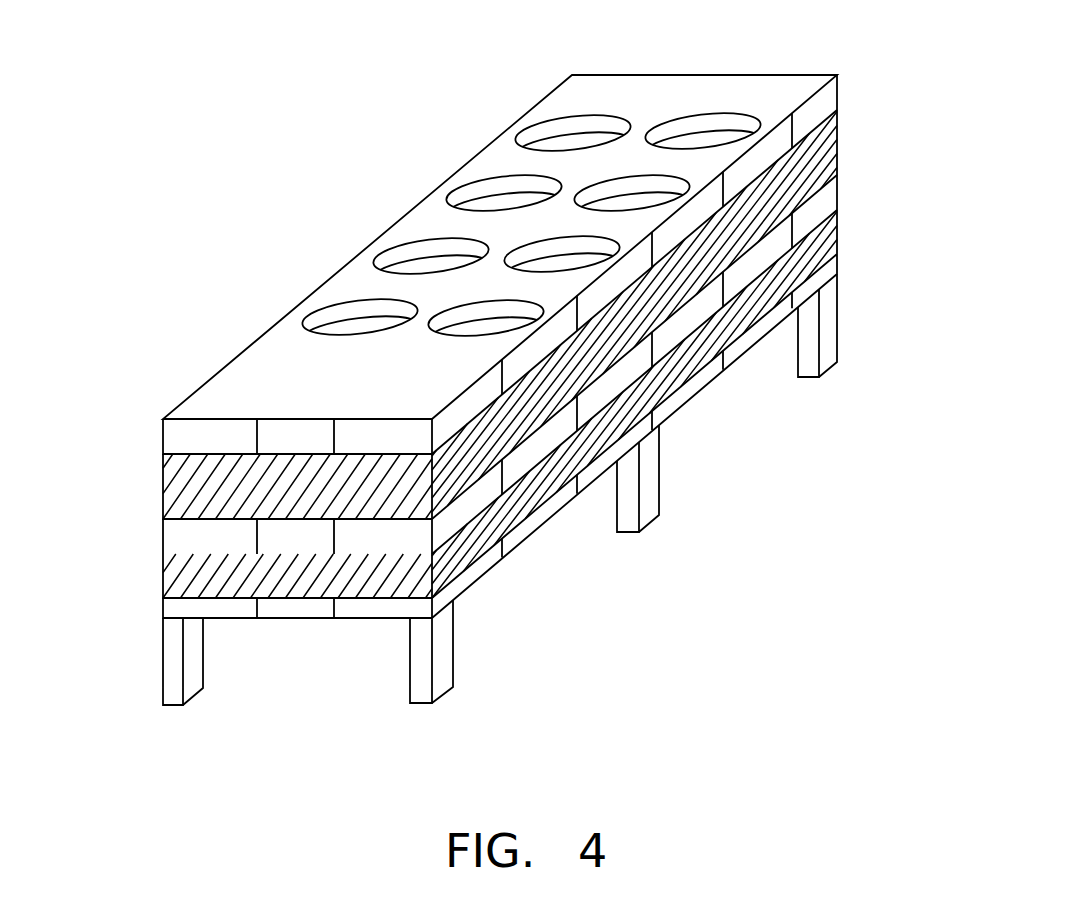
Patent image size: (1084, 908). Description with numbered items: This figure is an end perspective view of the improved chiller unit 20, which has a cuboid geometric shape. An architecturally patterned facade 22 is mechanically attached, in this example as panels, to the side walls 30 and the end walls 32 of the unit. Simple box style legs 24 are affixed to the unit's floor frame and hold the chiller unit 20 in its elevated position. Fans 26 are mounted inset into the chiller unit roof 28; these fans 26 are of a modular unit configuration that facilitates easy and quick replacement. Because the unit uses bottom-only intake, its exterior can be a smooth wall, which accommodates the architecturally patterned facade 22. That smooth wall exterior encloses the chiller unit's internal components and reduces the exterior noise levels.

The chiller unit 20 is at (175, 439).
The architecturally patterned facade 22 is at (528, 528).
The box style legs 24 is at (440, 678).
The fans 26 is at (390, 240).
The chiller unit roof 28 is at (538, 107).
The side walls 30 is at (827, 203).
The end walls 32 is at (175, 543).